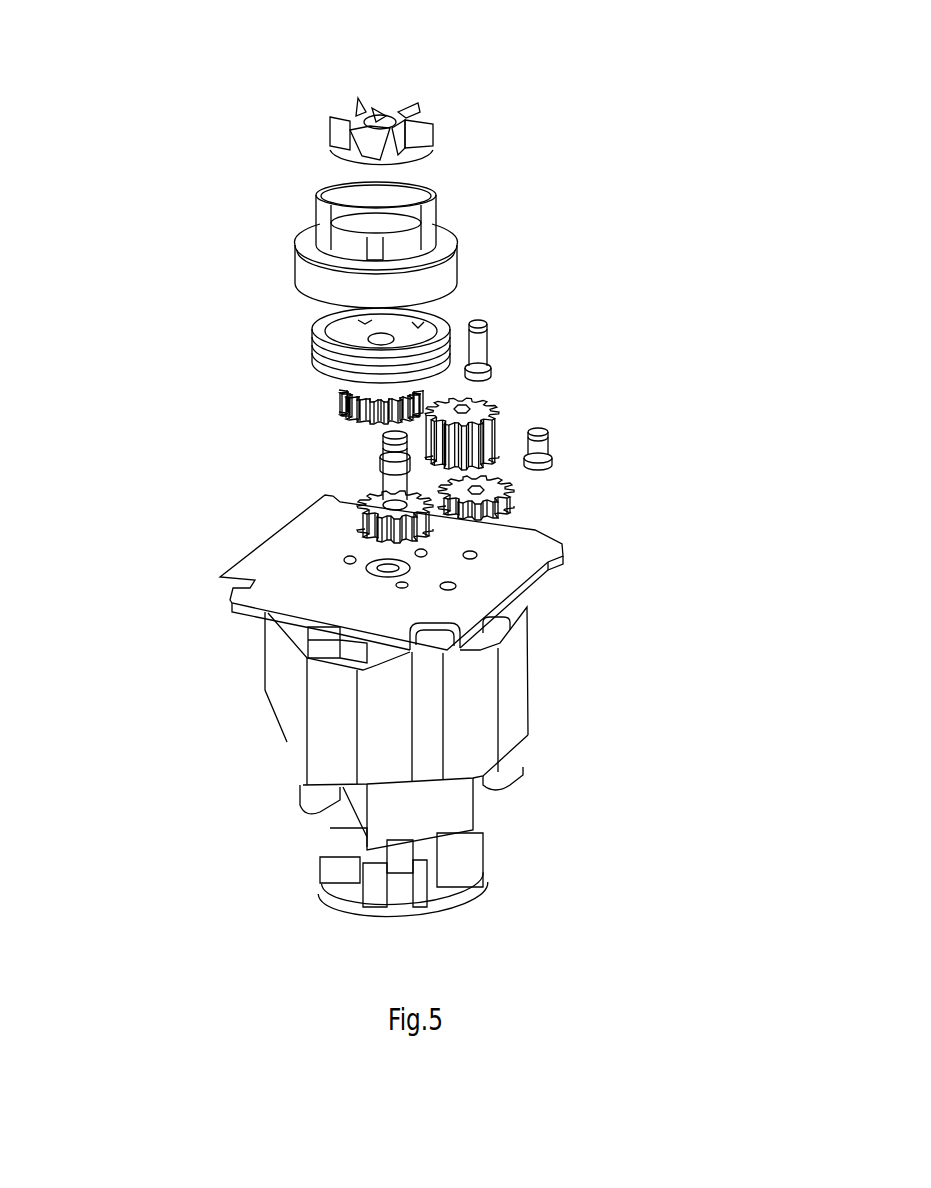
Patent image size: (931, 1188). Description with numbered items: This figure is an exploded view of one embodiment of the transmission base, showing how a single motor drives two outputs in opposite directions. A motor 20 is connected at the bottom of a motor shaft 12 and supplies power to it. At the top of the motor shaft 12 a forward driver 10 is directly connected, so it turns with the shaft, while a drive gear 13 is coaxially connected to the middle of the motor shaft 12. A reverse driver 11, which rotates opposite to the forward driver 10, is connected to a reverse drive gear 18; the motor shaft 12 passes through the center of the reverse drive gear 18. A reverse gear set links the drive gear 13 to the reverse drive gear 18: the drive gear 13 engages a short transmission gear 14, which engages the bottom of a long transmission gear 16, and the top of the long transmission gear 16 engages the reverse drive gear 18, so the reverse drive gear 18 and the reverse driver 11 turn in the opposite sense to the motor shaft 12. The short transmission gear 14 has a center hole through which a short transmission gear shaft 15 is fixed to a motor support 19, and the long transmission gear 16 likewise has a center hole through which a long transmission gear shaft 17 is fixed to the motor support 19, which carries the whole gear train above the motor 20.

The forward driver 10 is at (432, 117).
The reverse driver 11 is at (455, 243).
The motor shaft 12 is at (380, 473).
The drive gear 13 is at (330, 500).
The short transmission gear 14 is at (515, 507).
The short transmission gear shaft 15 is at (552, 457).
The long transmission gear 16 is at (500, 410).
The long transmission gear shaft 17 is at (492, 337).
The reverse drive gear 18 is at (310, 343).
The motor support 19 is at (525, 572).
The motor 20 is at (518, 742).